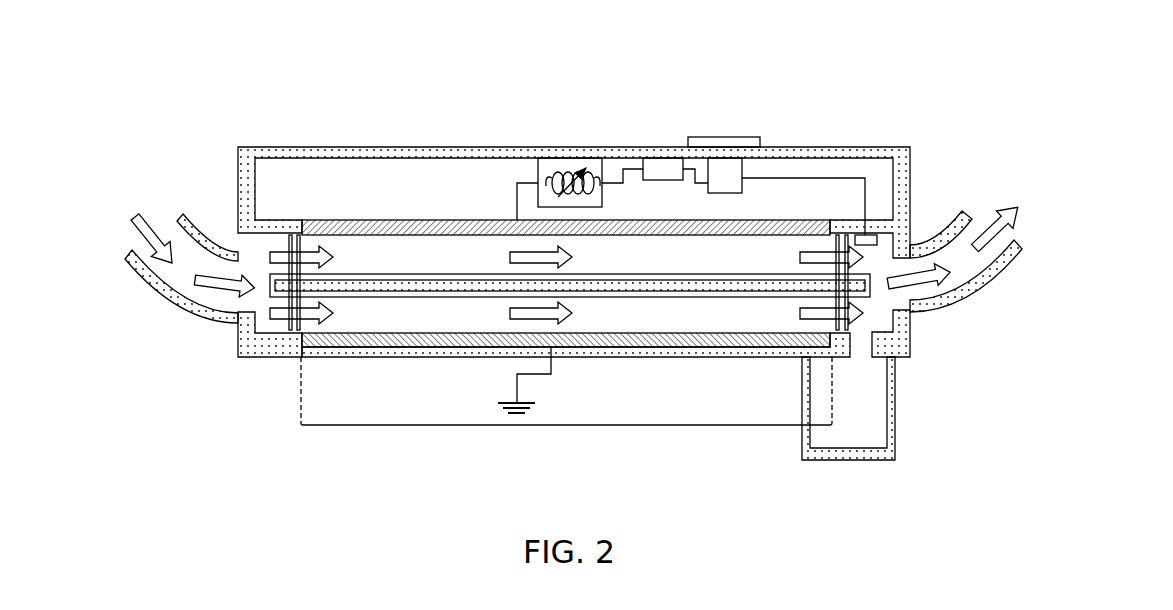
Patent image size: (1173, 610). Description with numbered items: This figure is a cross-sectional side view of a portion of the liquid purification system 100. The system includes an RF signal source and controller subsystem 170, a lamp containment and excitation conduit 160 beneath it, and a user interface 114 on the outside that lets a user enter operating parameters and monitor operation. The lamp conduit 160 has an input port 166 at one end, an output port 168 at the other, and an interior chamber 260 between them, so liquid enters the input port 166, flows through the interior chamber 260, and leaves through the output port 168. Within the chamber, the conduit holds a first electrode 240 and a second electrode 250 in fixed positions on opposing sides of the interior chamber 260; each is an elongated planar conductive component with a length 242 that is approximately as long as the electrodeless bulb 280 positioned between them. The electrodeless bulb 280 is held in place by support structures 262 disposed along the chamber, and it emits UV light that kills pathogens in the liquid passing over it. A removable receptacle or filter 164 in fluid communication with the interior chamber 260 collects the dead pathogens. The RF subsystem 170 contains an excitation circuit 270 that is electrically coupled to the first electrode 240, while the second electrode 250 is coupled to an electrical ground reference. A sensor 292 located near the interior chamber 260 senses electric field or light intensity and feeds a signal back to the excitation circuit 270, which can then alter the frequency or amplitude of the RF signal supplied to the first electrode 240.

The liquid purification system 100 is at (285, 116).
The user interface 114 is at (723, 150).
The lamp containment and excitation conduit 160 is at (237, 338).
The receptacle or filter 164 is at (895, 430).
The input port 166 is at (163, 294).
The output port 168 is at (968, 301).
The RF signal source and controller subsystem 170 is at (237, 163).
The first electrode 240 is at (368, 220).
The length 242 is at (587, 425).
The second electrode 250 is at (664, 342).
The interior chamber 260 is at (391, 312).
The support structures 262 is at (290, 327).
The excitation circuit 270 is at (488, 187).
The electrodeless bulb 280 is at (403, 283).
The sensor 292 is at (860, 235).